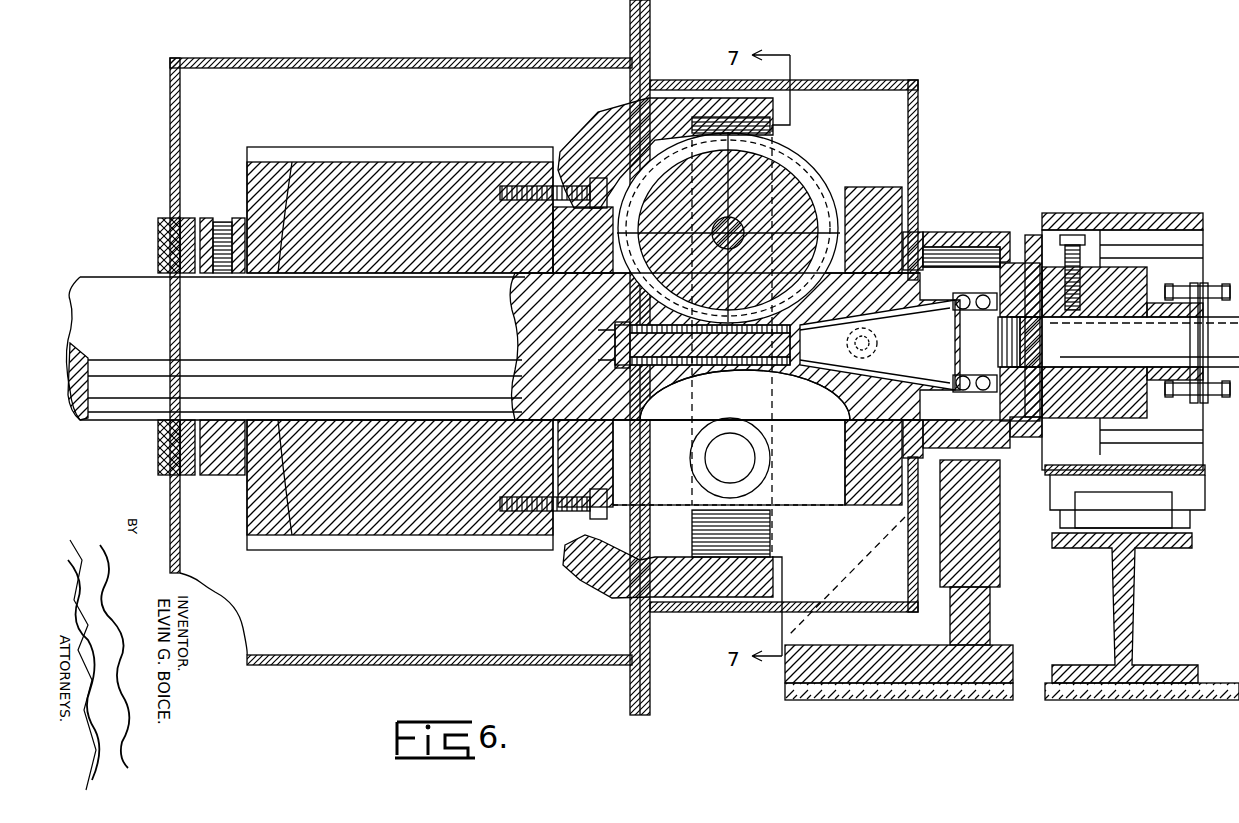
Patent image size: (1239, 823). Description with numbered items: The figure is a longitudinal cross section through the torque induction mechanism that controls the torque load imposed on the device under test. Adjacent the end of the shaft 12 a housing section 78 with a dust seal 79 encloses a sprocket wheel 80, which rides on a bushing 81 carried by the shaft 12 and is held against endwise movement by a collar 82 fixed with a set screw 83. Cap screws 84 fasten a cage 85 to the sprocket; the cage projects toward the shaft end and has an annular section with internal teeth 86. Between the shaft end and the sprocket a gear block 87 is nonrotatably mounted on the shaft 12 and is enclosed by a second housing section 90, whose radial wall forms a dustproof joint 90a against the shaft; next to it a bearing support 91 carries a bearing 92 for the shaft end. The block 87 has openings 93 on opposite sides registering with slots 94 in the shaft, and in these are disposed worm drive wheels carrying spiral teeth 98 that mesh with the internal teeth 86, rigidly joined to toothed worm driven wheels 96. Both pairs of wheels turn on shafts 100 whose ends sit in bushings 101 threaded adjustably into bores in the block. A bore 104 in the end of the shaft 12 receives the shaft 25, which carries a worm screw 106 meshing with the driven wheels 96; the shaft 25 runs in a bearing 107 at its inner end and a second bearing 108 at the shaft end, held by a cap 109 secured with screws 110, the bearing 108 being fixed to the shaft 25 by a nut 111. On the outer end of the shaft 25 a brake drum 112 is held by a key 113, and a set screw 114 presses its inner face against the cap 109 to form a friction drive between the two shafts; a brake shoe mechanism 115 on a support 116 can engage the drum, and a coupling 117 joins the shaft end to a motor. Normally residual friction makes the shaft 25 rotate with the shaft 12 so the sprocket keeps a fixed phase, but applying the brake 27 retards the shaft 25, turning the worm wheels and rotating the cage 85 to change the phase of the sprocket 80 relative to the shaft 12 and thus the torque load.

The shaft 12 is at (114, 300).
The shaft 25 is at (856, 415).
The brake 27 is at (1208, 452).
The housing section 78 is at (178, 93).
The dust seal 79 is at (158, 434).
The sprocket wheel 80 is at (348, 520).
The bushing 81 is at (276, 535).
The collar 82 is at (221, 475).
The set screw 83 is at (214, 218).
The cap screws 84 is at (566, 553).
The cage 85 is at (586, 575).
The internal teeth 86 is at (770, 128).
The gear block 87 is at (598, 462).
The second housing section 90 is at (918, 112).
The dustproof joint 90a is at (916, 238).
The bearing support 91 is at (986, 540).
The bearing 92 is at (986, 240).
The openings 93 is at (805, 497).
The slots 94 is at (790, 400).
The worm driven wheels 96 is at (786, 168).
The spiral teeth 98 is at (812, 180).
The shafts 100 is at (724, 228).
The bushings 101 is at (708, 486).
The bore 104 is at (962, 240).
The worm screw 106 is at (700, 402).
The bearing 107 is at (648, 402).
The second bearing 108 is at (962, 375).
The cap 109 is at (1033, 236).
The screws 110 is at (1023, 437).
The nut 111 is at (1016, 318).
The brake drum 112 is at (1115, 225).
The key 113 is at (1137, 300).
The set screw 114 is at (1078, 280).
The brake shoe mechanism 115 is at (1148, 505).
The support 116 is at (1133, 592).
The coupling 117 is at (1210, 284).